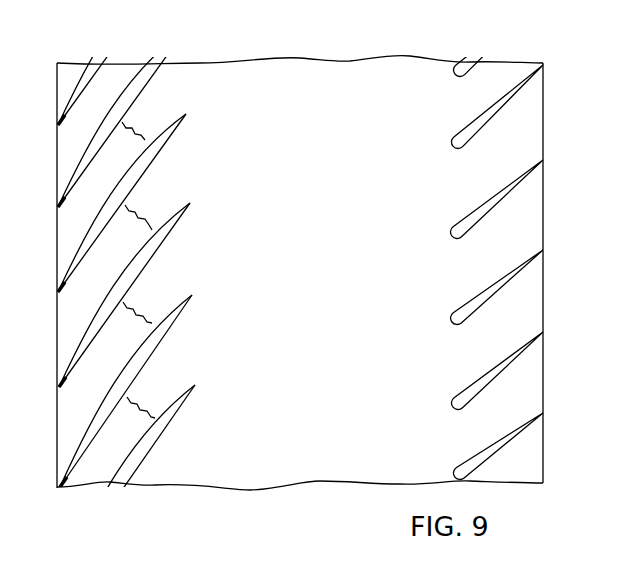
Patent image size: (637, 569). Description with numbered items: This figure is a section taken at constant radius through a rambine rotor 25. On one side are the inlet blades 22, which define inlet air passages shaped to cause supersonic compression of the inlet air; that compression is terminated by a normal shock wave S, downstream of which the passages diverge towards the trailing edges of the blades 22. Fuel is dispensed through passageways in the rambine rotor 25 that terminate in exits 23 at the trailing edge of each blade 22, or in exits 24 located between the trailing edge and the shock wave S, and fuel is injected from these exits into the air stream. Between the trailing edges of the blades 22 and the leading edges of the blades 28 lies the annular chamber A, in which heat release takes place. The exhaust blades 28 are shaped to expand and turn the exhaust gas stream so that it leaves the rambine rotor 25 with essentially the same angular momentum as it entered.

The blades 22 is at (97, 237).
The exits 23 is at (194, 385).
The exits 24 is at (166, 130).
The rambine rotor 25 is at (298, 443).
The blades 28 is at (488, 123).
The normal shock wave S is at (137, 135).
The chamber A is at (304, 254).